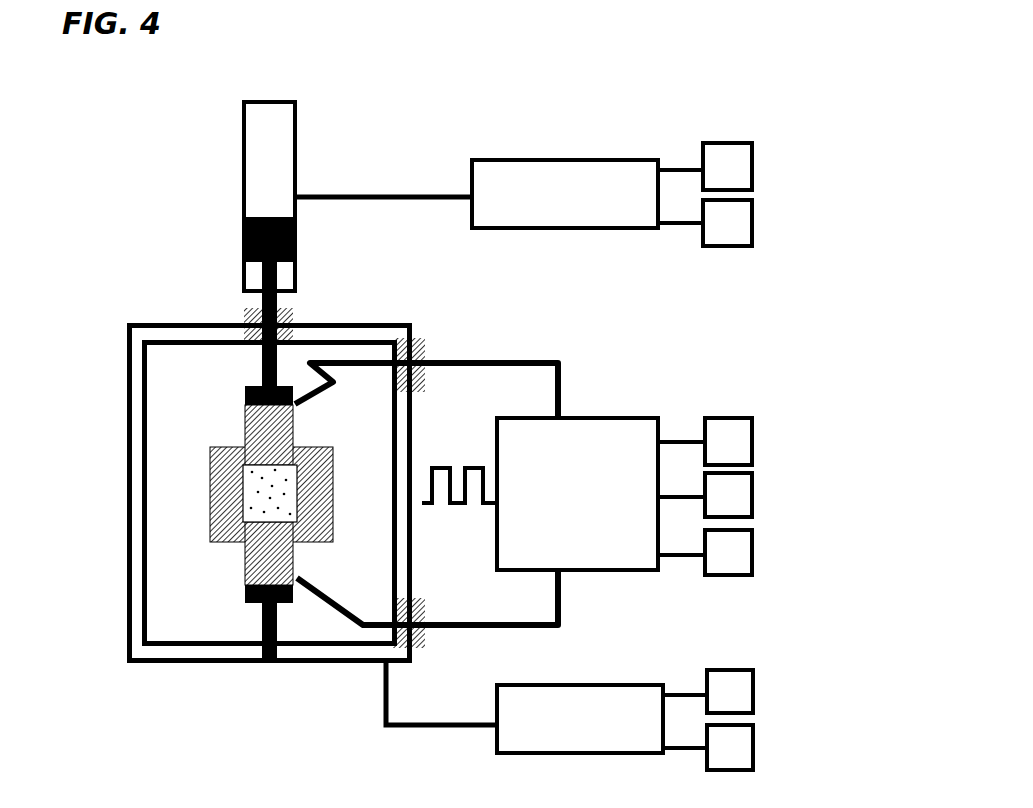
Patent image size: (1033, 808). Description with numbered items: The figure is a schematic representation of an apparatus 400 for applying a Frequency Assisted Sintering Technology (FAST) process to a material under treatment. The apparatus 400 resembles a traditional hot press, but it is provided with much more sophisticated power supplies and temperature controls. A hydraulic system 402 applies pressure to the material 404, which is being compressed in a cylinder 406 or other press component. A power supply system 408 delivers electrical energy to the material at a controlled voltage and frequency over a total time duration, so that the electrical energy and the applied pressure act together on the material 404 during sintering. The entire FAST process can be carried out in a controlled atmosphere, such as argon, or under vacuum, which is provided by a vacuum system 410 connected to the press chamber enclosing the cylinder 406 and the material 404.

The apparatus 400 is at (436, 45).
The hydraulic system 402 is at (775, 190).
The material 404 is at (258, 487).
The cylinder 406 is at (178, 484).
The power supply system 408 is at (773, 497).
The vacuum system 410 is at (765, 720).